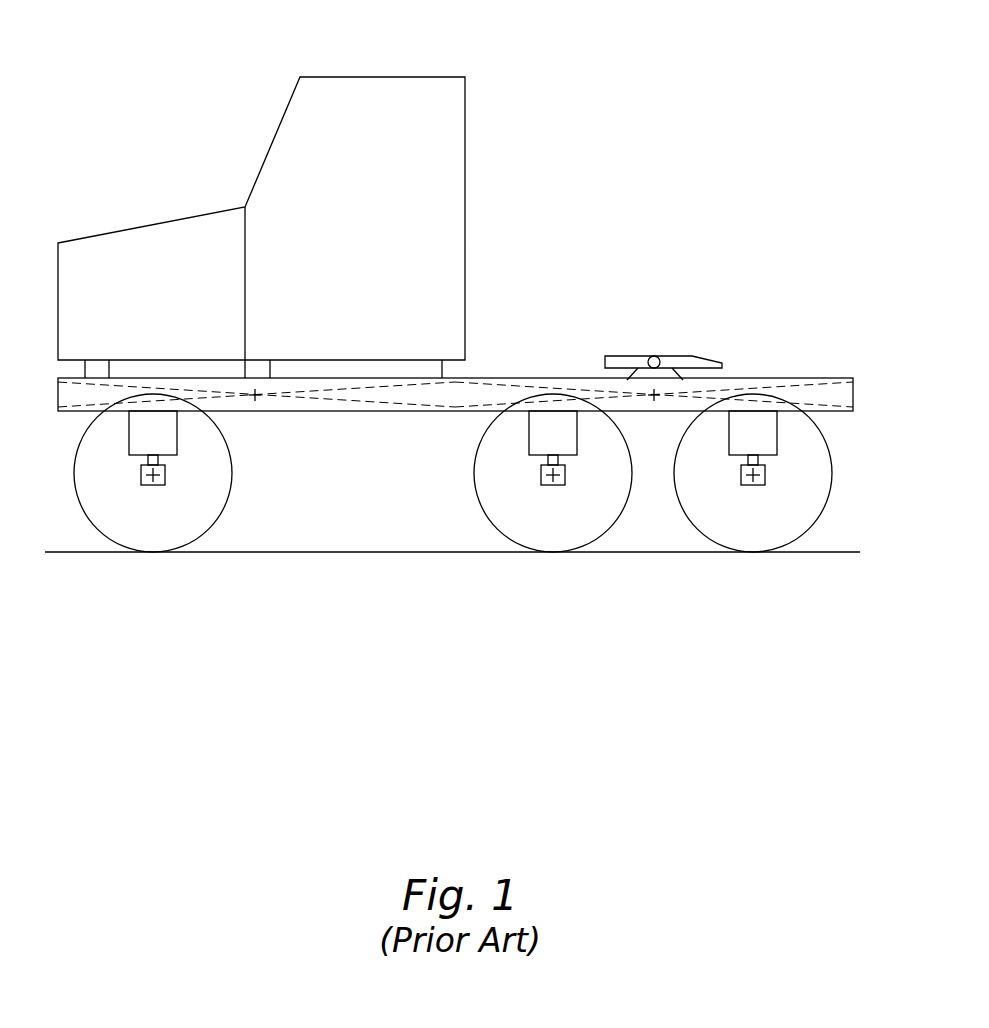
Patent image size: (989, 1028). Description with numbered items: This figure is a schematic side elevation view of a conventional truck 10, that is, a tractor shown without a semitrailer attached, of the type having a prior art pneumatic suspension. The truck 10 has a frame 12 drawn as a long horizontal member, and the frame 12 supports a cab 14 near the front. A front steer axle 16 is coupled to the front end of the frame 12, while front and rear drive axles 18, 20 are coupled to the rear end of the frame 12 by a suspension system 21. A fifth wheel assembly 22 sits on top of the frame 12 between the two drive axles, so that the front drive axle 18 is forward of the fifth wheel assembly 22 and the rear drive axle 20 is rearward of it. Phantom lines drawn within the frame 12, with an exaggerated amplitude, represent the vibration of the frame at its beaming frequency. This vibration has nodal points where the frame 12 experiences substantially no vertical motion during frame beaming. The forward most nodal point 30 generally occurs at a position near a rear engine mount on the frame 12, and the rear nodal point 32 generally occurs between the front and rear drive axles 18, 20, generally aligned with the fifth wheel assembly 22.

The truck 10 is at (517, 48).
The frame 12 is at (520, 378).
The cab 14 is at (448, 137).
The front steer axle 16 is at (141, 471).
The front drive axle 18 is at (555, 477).
The rear drive axle 20 is at (753, 486).
The suspension system 21 is at (790, 437).
The fifth wheel assembly 22 is at (641, 356).
The forward most nodal point 30 is at (256, 396).
The rear nodal point 32 is at (657, 395).